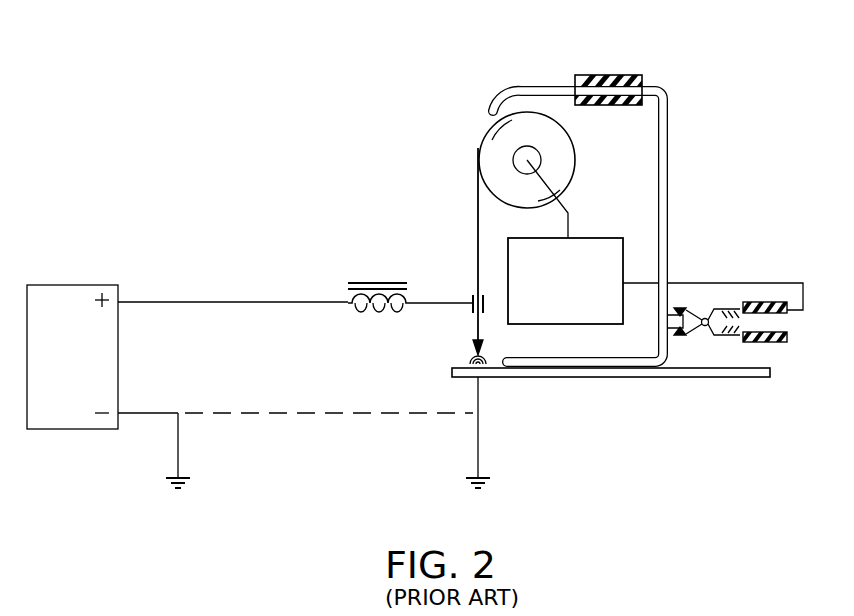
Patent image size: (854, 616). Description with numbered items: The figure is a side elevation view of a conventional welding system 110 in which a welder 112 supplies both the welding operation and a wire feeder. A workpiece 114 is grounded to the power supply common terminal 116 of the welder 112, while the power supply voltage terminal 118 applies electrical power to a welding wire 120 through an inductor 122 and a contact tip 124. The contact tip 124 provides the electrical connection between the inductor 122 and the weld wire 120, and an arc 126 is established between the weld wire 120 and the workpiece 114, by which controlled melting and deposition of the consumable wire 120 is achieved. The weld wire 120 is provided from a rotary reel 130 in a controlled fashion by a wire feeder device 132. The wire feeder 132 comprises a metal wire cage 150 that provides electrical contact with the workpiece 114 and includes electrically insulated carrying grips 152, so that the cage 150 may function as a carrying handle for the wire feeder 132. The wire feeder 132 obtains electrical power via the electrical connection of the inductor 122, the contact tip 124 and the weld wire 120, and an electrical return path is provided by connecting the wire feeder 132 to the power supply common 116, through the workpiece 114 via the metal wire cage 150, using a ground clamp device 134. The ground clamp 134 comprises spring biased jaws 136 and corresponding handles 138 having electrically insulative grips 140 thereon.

The welding system 110 is at (232, 100).
The welder 112 is at (57, 285).
The workpiece 114 is at (532, 378).
The power supply common terminal 116 is at (121, 412).
The power supply voltage terminal 118 is at (121, 300).
The welding wire 120 is at (477, 220).
The inductor 122 is at (372, 283).
The contact tip 124 is at (471, 296).
The arc 126 is at (468, 360).
The rotary reel 130 is at (480, 137).
The wire feeder device 132 is at (591, 238).
The ground clamp device 134 is at (735, 360).
The spring biased jaws 136 is at (680, 337).
The handles 138 is at (792, 355).
The electrically insulative grips 140 is at (773, 332).
The metal wire cage 150 is at (669, 150).
The electrically insulated carrying grips 152 is at (600, 73).